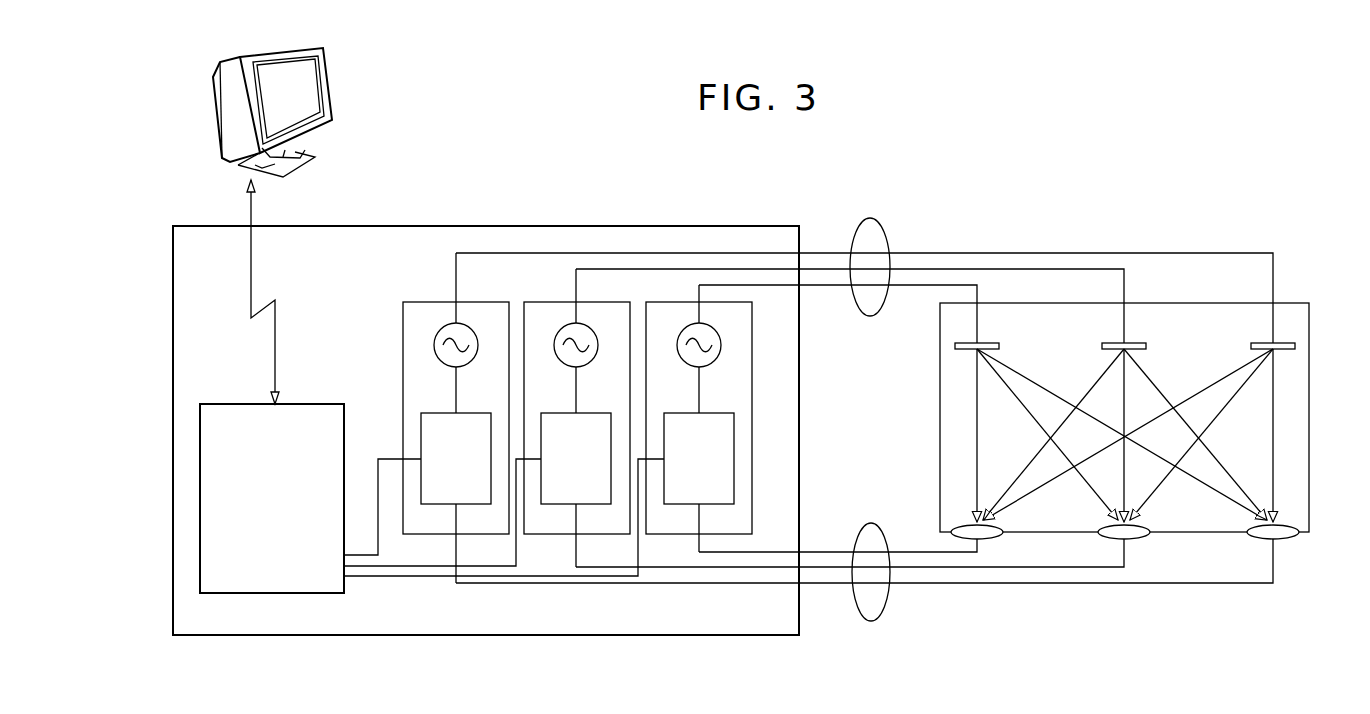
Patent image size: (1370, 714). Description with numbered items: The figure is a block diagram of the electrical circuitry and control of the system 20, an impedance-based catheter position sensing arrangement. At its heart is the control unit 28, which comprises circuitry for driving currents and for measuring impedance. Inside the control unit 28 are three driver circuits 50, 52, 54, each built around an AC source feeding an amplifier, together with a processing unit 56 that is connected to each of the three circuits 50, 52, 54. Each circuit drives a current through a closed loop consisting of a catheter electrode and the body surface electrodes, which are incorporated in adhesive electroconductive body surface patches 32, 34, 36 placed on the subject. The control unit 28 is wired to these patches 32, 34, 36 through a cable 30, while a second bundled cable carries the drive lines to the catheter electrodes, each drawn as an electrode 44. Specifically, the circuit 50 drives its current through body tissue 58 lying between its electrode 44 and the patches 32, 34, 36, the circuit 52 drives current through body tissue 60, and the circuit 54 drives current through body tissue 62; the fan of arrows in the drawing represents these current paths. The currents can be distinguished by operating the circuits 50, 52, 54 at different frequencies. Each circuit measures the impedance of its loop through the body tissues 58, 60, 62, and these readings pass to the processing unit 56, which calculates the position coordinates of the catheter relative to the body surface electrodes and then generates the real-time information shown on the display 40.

The system 20 is at (878, 224).
The control unit 28 is at (228, 636).
The cable 30 is at (876, 524).
The body surface patch 32 is at (985, 539).
The body surface patch 34 is at (1133, 539).
The body surface patch 36 is at (1285, 539).
The display 40 is at (328, 60).
The electrode 44 is at (999, 348).
The circuit 50 is at (689, 362).
The circuit 52 is at (566, 362).
The circuit 54 is at (446, 362).
The processing unit 56 is at (213, 404).
The body tissue 58 is at (968, 372).
The body tissue 60 is at (1103, 357).
The body tissue 62 is at (1250, 355).